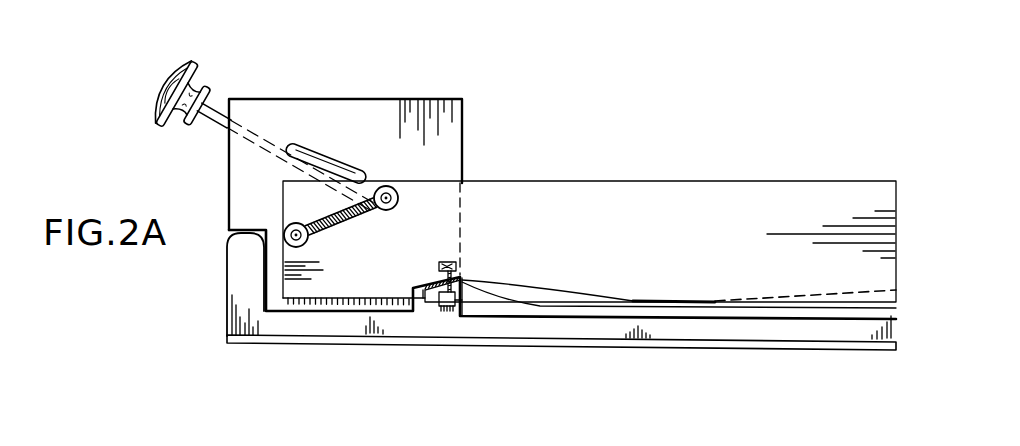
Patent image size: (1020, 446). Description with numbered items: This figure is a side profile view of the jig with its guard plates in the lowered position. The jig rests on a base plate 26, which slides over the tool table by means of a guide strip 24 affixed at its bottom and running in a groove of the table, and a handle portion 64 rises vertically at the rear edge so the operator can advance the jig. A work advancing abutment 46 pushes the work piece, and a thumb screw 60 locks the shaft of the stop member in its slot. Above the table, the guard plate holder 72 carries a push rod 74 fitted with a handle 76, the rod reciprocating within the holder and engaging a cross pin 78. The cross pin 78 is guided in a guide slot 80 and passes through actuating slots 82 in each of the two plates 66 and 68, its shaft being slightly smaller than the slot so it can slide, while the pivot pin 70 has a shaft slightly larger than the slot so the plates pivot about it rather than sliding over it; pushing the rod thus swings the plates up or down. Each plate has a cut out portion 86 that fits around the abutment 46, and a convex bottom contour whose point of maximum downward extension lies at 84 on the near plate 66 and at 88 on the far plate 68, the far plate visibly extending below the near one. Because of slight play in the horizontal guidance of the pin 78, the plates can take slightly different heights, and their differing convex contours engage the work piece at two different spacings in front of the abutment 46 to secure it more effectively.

The guide strip 24 is at (308, 344).
The base plate 26 is at (740, 332).
The abutment 46 is at (463, 279).
The thumb screw 60 is at (450, 262).
The handle portion 64 is at (240, 260).
The plate 66 is at (775, 195).
The plate 68 is at (633, 304).
The pivot pin 70 is at (284, 230).
The guard plate holder 72 is at (312, 99).
The push rod 74 is at (213, 122).
The handle 76 is at (177, 73).
The cross pin 78 is at (395, 190).
The guide slot 80 is at (323, 158).
The actuating slot 82 is at (345, 223).
The convex contour 84 is at (603, 297).
The cut out portion 86 is at (413, 312).
The point of maximum downward extension 88 is at (532, 306).